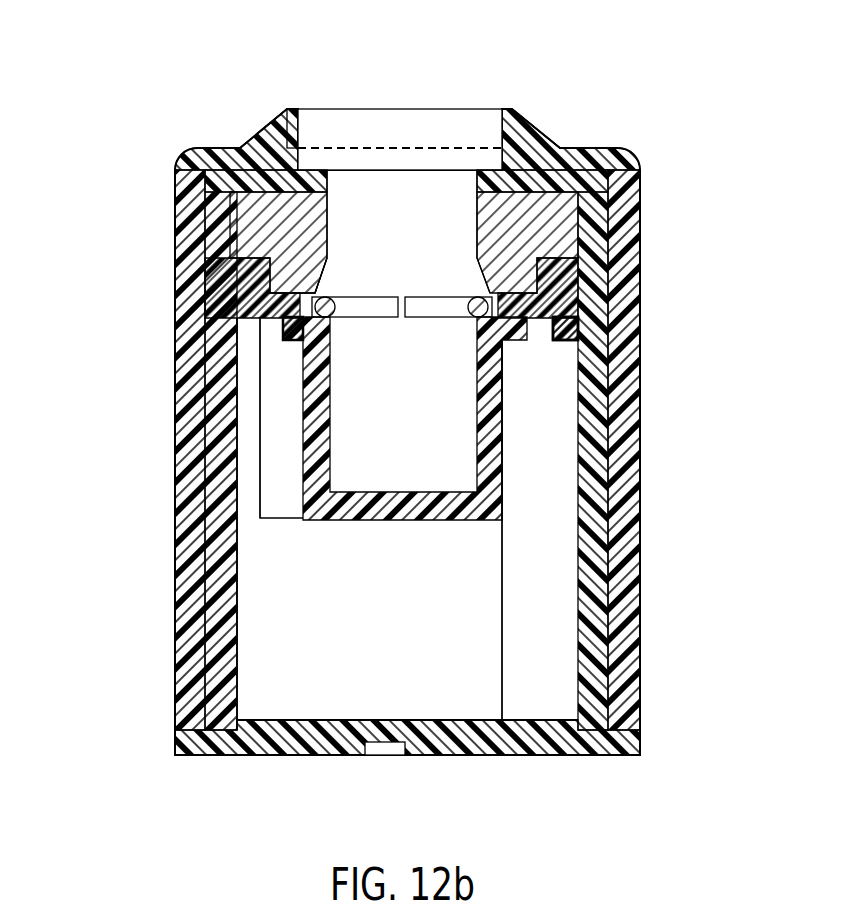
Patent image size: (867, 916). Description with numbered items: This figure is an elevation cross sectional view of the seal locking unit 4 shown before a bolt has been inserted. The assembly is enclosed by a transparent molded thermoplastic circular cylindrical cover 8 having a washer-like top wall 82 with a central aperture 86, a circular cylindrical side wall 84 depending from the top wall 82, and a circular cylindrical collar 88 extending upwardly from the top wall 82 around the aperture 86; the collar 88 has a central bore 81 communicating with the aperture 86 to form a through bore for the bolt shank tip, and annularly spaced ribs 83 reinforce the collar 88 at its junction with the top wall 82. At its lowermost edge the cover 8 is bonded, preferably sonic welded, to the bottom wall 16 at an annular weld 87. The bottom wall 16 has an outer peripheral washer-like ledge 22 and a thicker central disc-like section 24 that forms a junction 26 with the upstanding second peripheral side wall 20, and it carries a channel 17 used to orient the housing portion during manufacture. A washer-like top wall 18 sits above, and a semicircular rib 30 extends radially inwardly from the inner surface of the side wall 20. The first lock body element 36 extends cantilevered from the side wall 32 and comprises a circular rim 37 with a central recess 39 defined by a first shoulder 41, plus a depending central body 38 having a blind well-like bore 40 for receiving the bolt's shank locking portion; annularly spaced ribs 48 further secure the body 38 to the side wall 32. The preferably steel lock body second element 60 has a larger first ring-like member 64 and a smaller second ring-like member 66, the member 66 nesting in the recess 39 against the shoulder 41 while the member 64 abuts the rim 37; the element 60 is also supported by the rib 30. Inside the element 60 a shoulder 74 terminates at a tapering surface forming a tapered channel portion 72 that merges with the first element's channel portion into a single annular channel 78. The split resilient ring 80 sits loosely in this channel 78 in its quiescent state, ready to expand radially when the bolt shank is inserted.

The seal locking unit 4 is at (128, 380).
The cover 8 is at (641, 396).
The bottom wall 16 is at (536, 740).
The channel 17 is at (388, 757).
The top wall 18 is at (316, 178).
The second peripheral side wall 20 is at (593, 638).
The ledge 22 is at (197, 757).
The central section 24 is at (337, 720).
The junction 26 is at (560, 720).
The rib 30 is at (563, 340).
The side wall 32 is at (237, 607).
The lock body element 36 is at (283, 326).
The rim 37 is at (565, 258).
The body 38 is at (500, 443).
The recess 39 is at (275, 287).
The bore 40 is at (415, 473).
The first shoulder 41 is at (283, 341).
The rib 48 is at (273, 430).
The lock body second element 60 is at (472, 232).
The first ring-like member 64 is at (247, 227).
The second ring-like member 66 is at (240, 272).
The tapered channel portion 72 is at (318, 273).
The shoulder 74 is at (492, 300).
The annular channel 78 is at (437, 265).
The split resilient ring 80 is at (362, 320).
The central bore 81 is at (313, 172).
The top wall 82 is at (585, 146).
The ribs 83 is at (258, 133).
The side wall 84 is at (176, 608).
The central aperture 86 is at (398, 168).
The annular weld 87 is at (640, 732).
The collar 88 is at (452, 108).